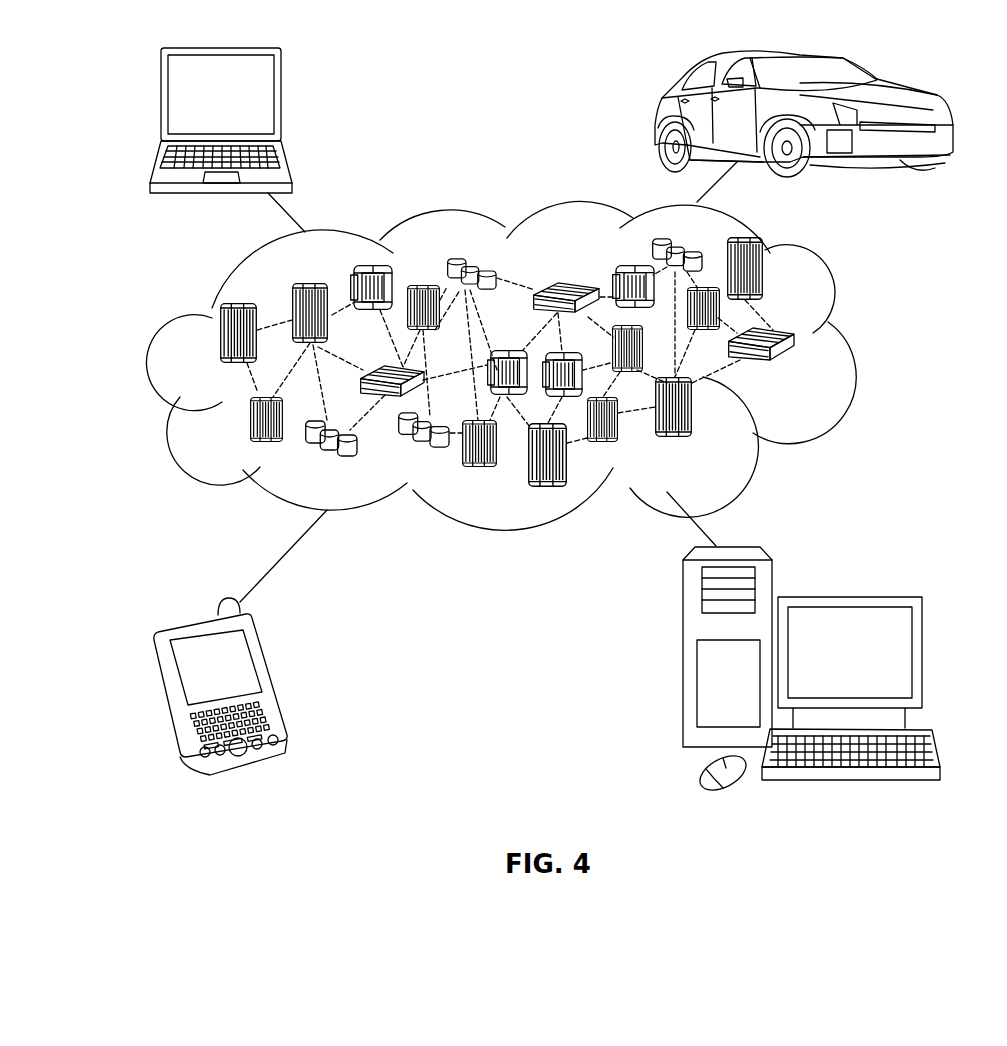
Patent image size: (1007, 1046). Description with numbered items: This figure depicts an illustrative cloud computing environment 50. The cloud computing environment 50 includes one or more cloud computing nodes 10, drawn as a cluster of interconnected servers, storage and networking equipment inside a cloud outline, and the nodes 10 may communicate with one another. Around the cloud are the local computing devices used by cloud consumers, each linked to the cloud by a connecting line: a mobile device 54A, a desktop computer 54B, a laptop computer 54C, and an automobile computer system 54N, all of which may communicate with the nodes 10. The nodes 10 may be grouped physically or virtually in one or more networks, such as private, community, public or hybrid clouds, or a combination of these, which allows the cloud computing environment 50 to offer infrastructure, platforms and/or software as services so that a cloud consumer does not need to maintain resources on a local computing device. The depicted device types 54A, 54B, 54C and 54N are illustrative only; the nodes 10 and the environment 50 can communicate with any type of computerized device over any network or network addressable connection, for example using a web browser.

The cloud computing node 10 is at (794, 367).
The cloud computing environment 50 is at (848, 342).
The mobile device 54A is at (270, 677).
The desktop computer 54B is at (847, 595).
The laptop computer 54C is at (282, 100).
The automobile computer system 54N is at (658, 117).